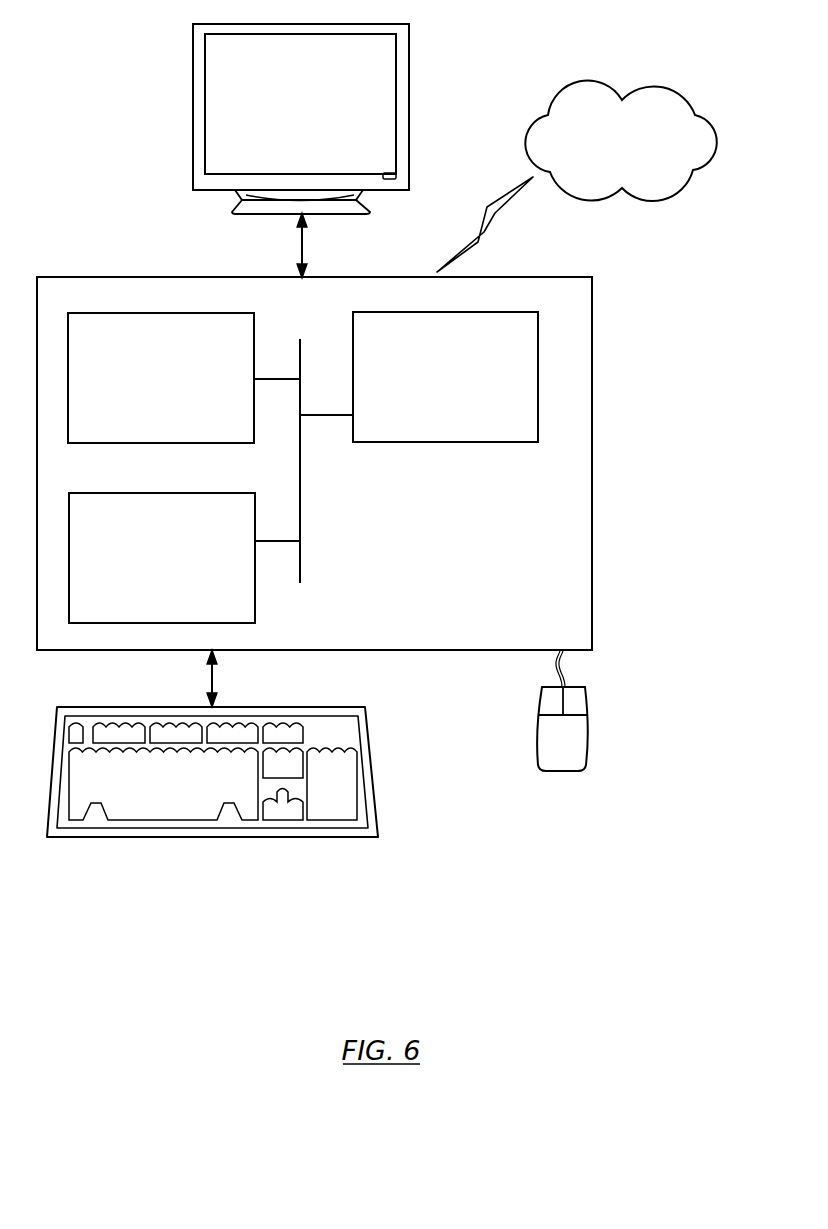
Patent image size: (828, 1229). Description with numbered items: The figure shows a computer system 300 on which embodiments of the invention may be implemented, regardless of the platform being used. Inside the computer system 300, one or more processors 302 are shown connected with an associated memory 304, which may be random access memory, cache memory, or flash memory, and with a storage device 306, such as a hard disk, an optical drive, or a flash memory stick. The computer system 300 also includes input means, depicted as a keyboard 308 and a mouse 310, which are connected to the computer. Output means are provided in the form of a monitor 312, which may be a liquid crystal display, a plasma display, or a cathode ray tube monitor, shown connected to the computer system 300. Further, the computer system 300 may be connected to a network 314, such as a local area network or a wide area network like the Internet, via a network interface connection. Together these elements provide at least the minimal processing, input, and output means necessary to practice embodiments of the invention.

The computer system 300 is at (396, 437).
The processor 302 is at (427, 375).
The memory 304 is at (141, 378).
The storage device 306 is at (145, 556).
The keyboard 308 is at (144, 782).
The mouse 310 is at (594, 779).
The monitor 312 is at (280, 111).
The network 314 is at (606, 145).